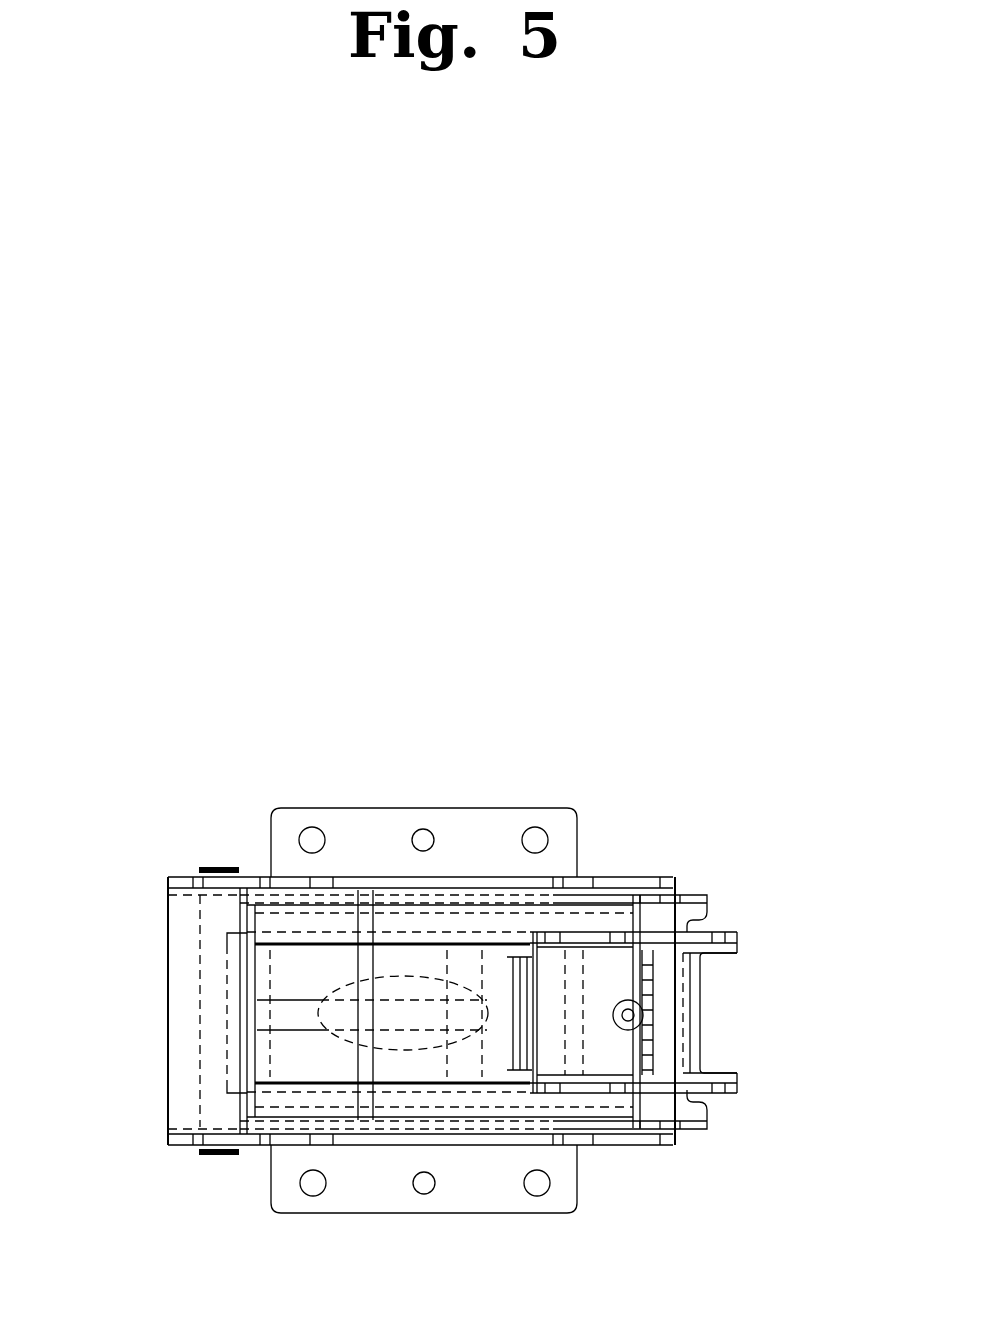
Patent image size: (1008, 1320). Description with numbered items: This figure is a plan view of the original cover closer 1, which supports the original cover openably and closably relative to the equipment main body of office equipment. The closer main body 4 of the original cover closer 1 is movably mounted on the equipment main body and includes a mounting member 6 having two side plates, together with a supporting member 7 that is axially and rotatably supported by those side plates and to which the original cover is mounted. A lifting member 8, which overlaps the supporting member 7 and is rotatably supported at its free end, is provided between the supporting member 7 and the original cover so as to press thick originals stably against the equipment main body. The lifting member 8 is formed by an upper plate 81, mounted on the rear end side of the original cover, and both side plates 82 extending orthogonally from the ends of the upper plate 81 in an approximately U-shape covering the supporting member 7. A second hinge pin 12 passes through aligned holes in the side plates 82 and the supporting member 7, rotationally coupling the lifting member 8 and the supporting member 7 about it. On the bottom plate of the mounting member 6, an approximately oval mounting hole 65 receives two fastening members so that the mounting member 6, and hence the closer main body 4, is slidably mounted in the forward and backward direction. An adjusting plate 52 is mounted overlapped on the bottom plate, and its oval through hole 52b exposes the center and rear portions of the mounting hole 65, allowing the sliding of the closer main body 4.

The original cover closer 1 is at (789, 808).
The closer main body 4 is at (754, 1091).
The mounting member 6 is at (715, 996).
The supporting member 7 is at (713, 887).
The lifting member 8 is at (160, 864).
The second hinge pin 12 is at (220, 867).
The adjusting plate 52 is at (290, 975).
The through hole 52b is at (450, 978).
The mounting hole 65 is at (383, 892).
The upper plate 81 is at (183, 1077).
The side plates 82 is at (622, 875).